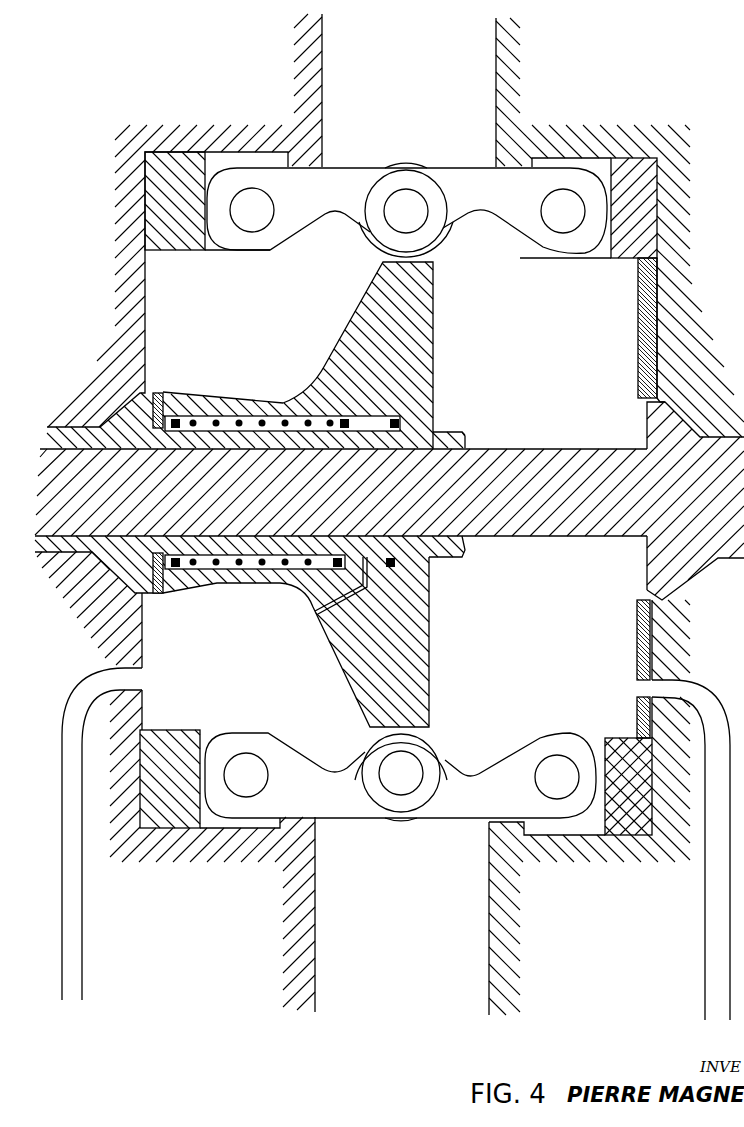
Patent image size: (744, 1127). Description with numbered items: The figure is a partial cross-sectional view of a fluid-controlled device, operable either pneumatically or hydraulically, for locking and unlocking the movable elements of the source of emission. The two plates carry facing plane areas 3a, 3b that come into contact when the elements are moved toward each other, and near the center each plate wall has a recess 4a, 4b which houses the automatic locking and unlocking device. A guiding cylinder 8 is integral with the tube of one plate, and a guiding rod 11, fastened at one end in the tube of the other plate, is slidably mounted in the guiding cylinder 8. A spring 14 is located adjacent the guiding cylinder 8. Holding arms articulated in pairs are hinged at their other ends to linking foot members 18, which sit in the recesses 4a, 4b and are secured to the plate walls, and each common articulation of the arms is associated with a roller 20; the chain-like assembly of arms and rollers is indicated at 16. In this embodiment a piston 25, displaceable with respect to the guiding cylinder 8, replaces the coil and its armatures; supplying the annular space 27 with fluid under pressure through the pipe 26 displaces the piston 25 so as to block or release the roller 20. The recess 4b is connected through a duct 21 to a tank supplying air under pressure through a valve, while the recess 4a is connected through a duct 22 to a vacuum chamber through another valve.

The plane area 3a is at (322, 93).
The plane area 3b is at (496, 80).
The recess 4a is at (222, 323).
The recess 4b is at (555, 328).
The guiding cylinder 8 is at (218, 563).
The guiding rod 11 is at (545, 523).
The spring 14 is at (262, 418).
The chain links 16 is at (440, 800).
The linking foot member 18 is at (165, 812).
The roller 20 is at (368, 737).
The duct 21 is at (716, 922).
The duct 22 is at (75, 800).
The piston 25 is at (400, 360).
The pipe 26 is at (318, 612).
The annular space 27 is at (433, 597).